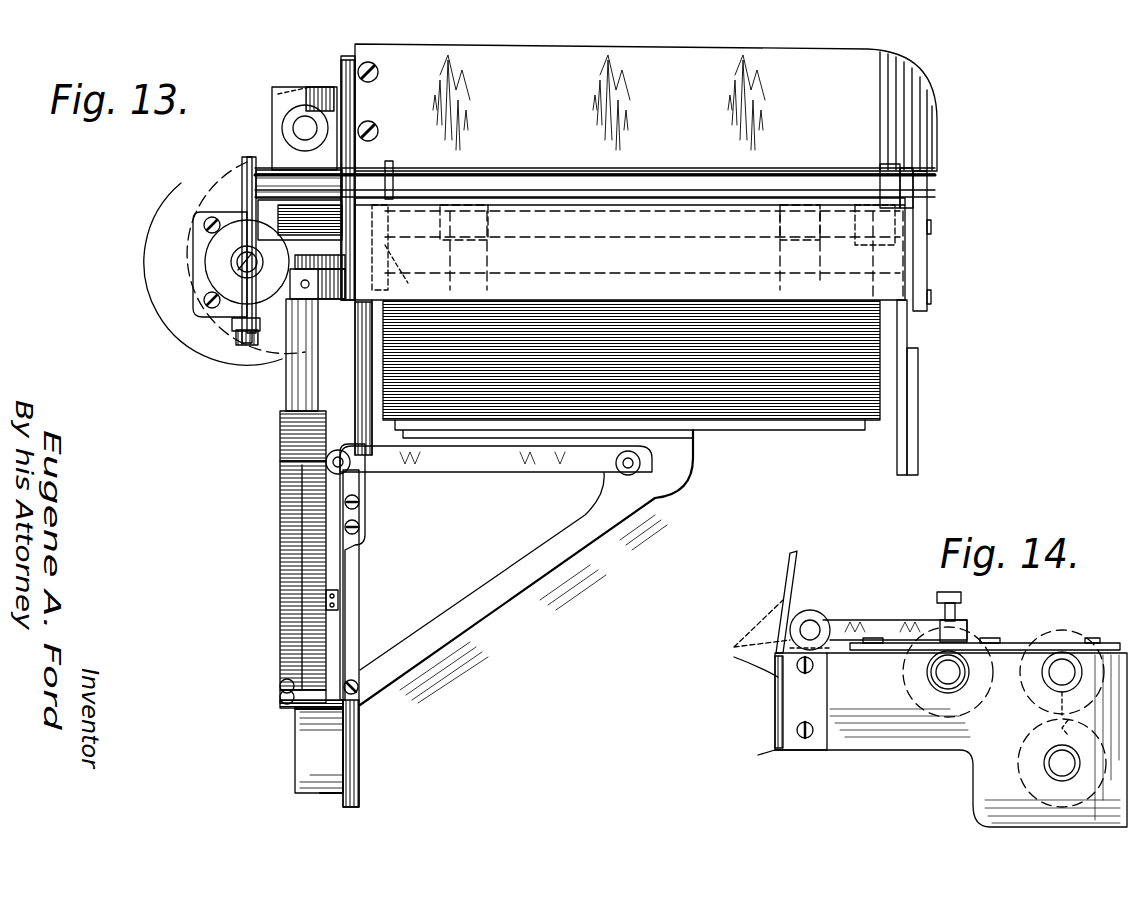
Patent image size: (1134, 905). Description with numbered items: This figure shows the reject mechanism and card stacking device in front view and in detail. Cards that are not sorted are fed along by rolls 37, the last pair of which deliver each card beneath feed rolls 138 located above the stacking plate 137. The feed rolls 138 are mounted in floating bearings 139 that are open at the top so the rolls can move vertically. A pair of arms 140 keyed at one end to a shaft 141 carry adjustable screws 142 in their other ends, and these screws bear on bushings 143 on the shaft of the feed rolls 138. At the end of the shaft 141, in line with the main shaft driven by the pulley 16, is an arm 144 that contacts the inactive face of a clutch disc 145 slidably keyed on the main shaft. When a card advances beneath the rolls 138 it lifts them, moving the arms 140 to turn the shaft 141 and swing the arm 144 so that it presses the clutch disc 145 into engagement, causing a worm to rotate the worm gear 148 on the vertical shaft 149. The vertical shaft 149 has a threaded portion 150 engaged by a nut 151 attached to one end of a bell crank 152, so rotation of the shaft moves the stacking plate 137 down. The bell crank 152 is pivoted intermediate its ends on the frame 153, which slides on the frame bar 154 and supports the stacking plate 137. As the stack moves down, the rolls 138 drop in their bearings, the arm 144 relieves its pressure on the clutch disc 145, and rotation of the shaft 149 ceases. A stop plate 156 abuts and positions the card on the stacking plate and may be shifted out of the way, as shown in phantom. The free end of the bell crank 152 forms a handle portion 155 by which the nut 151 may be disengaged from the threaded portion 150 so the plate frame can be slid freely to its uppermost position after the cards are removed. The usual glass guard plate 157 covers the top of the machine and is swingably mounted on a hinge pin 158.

In FIG. 13, the pulley 16 is at (165, 266).
In FIG. 14, the rolls 37 is at (1068, 637).
In FIG. 13, the stacking plate 137 is at (752, 424).
In FIG. 13, the feed rolls 138 is at (488, 255).
In FIG. 14, the feed rolls 138 is at (973, 637).
In FIG. 14, the floating bearings 139 is at (953, 670).
In FIG. 13, the arms 140 is at (395, 178).
In FIG. 14, the arms 140 is at (855, 627).
In FIG. 13, the shaft 141 is at (246, 178).
In FIG. 14, the shaft 141 is at (812, 627).
In FIG. 14, the adjustable screws 142 is at (943, 598).
In FIG. 13, the bushings 143 is at (958, 234).
In FIG. 13, the arm 144 is at (245, 258).
In FIG. 13, the clutch disc 145 is at (220, 244).
In FIG. 13, the worm gear 148 is at (302, 288).
In FIG. 13, the vertical shaft 149 is at (308, 360).
In FIG. 13, the threaded portion 150 is at (290, 428).
In FIG. 13, the nut 151 is at (282, 585).
In FIG. 13, the bell crank 152 is at (508, 463).
In FIG. 13, the frame 153 is at (335, 612).
In FIG. 13, the frame bar 154 is at (360, 738).
In FIG. 13, the handle portion 155 is at (632, 476).
In FIG. 14, the stop plate 156 is at (763, 677).
In FIG. 13, the glass guard plate 157 is at (878, 135).
In FIG. 13, the hinge pin 158 is at (303, 128).